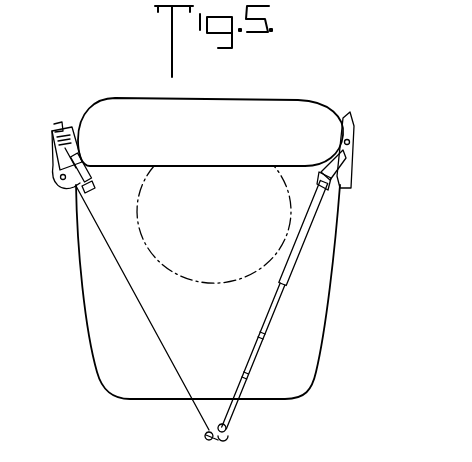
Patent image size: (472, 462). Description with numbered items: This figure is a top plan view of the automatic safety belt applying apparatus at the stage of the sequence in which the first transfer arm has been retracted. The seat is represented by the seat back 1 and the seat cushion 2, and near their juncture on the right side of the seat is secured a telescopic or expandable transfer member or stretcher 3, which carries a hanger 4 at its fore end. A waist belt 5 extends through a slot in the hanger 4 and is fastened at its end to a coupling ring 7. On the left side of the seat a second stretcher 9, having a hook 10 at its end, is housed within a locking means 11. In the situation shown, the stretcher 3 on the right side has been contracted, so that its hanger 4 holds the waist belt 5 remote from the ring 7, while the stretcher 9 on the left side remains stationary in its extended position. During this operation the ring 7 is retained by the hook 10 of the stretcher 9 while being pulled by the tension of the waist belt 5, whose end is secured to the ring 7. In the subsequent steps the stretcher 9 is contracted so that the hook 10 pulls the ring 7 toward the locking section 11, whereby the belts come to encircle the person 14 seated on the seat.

The seat back 1 is at (211, 88).
The seat cushion 2 is at (82, 250).
The stretcher 3 is at (82, 165).
The hanger 4 is at (113, 181).
The waist belt 5 is at (132, 297).
The coupling ring 7 is at (231, 425).
The stretcher 9 is at (289, 277).
The hook 10 is at (212, 437).
The locking means 11 is at (371, 106).
The person 14 is at (191, 283).